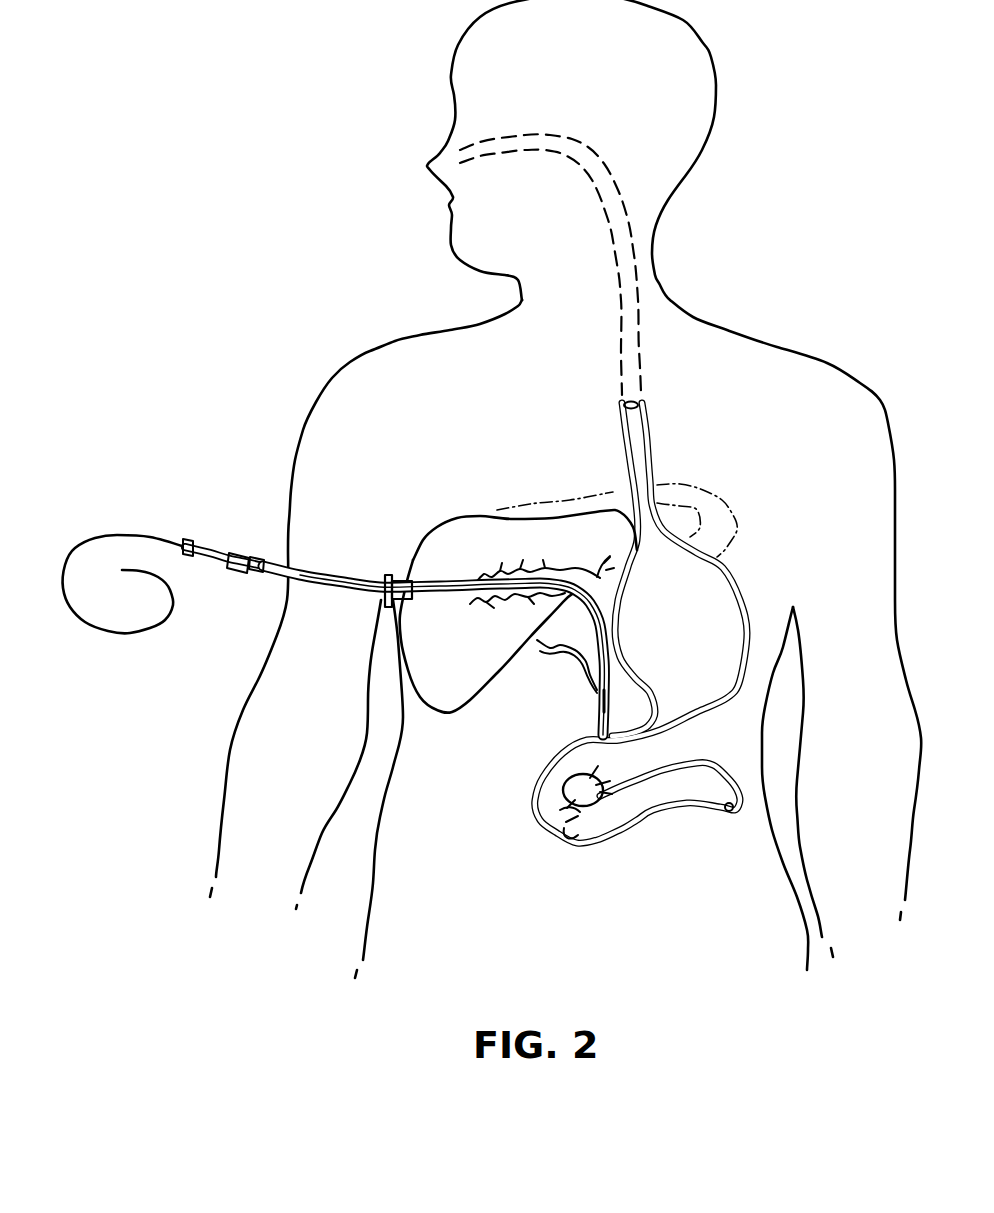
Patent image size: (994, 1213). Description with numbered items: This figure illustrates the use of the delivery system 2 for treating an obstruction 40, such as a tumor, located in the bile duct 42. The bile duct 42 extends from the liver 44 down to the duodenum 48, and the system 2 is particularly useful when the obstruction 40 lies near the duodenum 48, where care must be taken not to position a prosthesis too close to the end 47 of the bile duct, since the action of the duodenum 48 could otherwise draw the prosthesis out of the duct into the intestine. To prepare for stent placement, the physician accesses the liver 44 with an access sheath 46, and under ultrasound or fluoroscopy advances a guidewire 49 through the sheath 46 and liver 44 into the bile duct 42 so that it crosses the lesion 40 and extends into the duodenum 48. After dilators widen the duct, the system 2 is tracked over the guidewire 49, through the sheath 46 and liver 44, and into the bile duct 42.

The system 2 is at (315, 560).
The obstruction 40 is at (573, 793).
The bile duct 42 is at (578, 717).
The liver 44 is at (521, 537).
The access sheath 46 is at (393, 575).
The end of the bile duct 47 is at (548, 815).
The duodenum 48 is at (610, 815).
The guidewire 49 is at (563, 837).